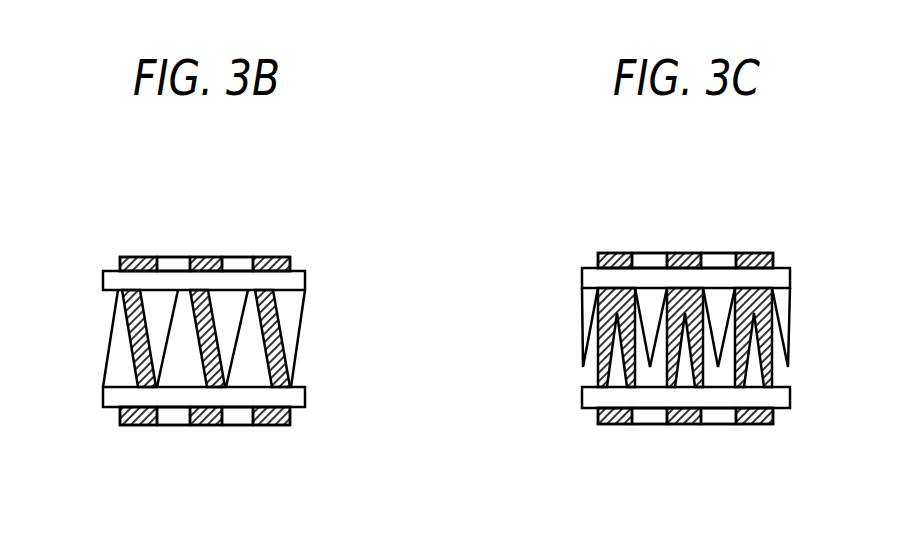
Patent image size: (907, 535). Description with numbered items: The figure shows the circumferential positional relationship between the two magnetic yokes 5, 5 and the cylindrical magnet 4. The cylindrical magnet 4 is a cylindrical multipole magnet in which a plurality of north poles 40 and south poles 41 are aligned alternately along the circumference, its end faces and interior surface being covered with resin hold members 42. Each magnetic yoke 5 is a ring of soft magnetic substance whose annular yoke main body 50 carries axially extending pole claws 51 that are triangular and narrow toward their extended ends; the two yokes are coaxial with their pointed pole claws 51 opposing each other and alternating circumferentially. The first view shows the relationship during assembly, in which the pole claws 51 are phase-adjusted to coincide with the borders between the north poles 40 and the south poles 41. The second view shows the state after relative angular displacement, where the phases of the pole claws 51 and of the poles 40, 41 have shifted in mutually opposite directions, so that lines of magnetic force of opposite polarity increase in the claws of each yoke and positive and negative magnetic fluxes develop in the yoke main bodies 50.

In FIG. 3B, the cylindrical magnet 4 is at (203, 341).
In FIG. 3C, the cylindrical magnet 4 is at (681, 341).
In FIG. 3B, the magnetic yoke 5 is at (203, 338).
In FIG. 3C, the magnetic yoke 5 is at (681, 337).
In FIG. 3B, the north pole 40 is at (125, 256).
In FIG. 3C, the north pole 40 is at (602, 253).
In FIG. 3B, the south pole 41 is at (166, 257).
In FIG. 3C, the south pole 41 is at (648, 253).
In FIG. 3B, the hold member 42 is at (182, 257).
In FIG. 3C, the hold member 42 is at (662, 253).
In FIG. 3B, the yoke main body 50 is at (106, 280).
In FIG. 3C, the yoke main body 50 is at (588, 278).
In FIG. 3B, the pole claw 51 is at (150, 308).
In FIG. 3C, the pole claw 51 is at (645, 305).